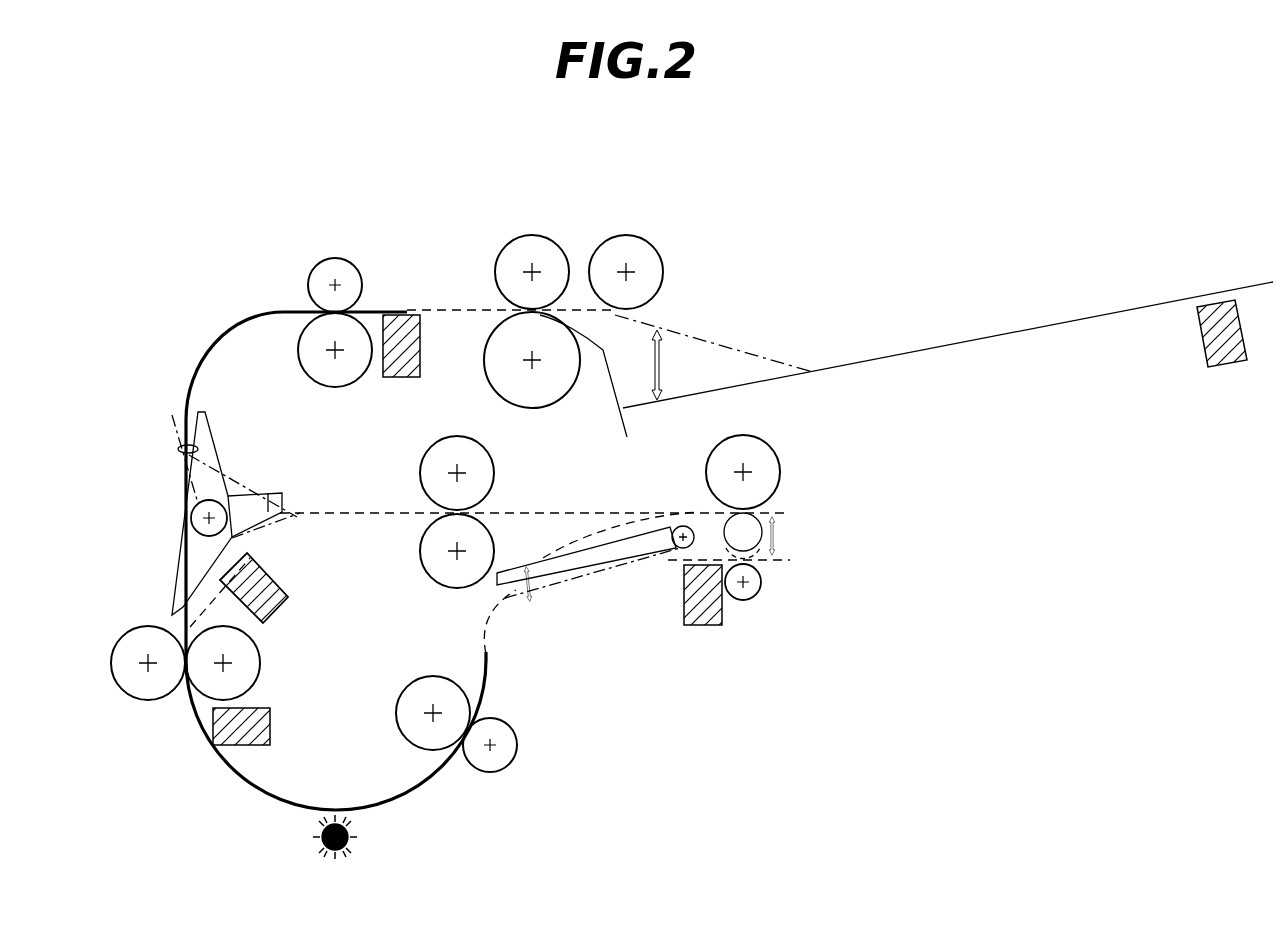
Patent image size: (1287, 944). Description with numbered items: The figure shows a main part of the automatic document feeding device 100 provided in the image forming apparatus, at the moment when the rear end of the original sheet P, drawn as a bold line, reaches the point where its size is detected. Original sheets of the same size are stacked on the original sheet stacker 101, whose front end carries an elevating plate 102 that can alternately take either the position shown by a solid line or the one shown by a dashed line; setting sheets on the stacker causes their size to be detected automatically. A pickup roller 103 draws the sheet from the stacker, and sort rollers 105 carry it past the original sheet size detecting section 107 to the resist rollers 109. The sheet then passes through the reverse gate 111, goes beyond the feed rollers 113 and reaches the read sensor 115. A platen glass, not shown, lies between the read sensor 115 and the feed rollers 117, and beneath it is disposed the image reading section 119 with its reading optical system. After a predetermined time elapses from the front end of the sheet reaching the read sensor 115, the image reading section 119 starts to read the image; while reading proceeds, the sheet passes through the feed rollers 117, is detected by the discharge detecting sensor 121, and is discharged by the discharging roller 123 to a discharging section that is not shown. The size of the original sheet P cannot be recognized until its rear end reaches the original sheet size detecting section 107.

The automatic document feeding device 100 is at (850, 266).
The original sheet stacker 101 is at (1047, 327).
The elevating plate 102 is at (742, 390).
The pickup roller 103 is at (640, 238).
The sort rollers 105 is at (536, 238).
The original sheet size detecting section 107 is at (421, 326).
The resist rollers 109 is at (332, 262).
The reverse gate 111 is at (254, 396).
The feed rollers 113 is at (128, 632).
The read sensor 115 is at (271, 712).
The feed rollers 117 is at (514, 728).
The image reading section 119 is at (375, 844).
The discharge detecting sensor 121 is at (692, 638).
The discharging roller 123 is at (762, 581).
The original sheet P is at (233, 328).